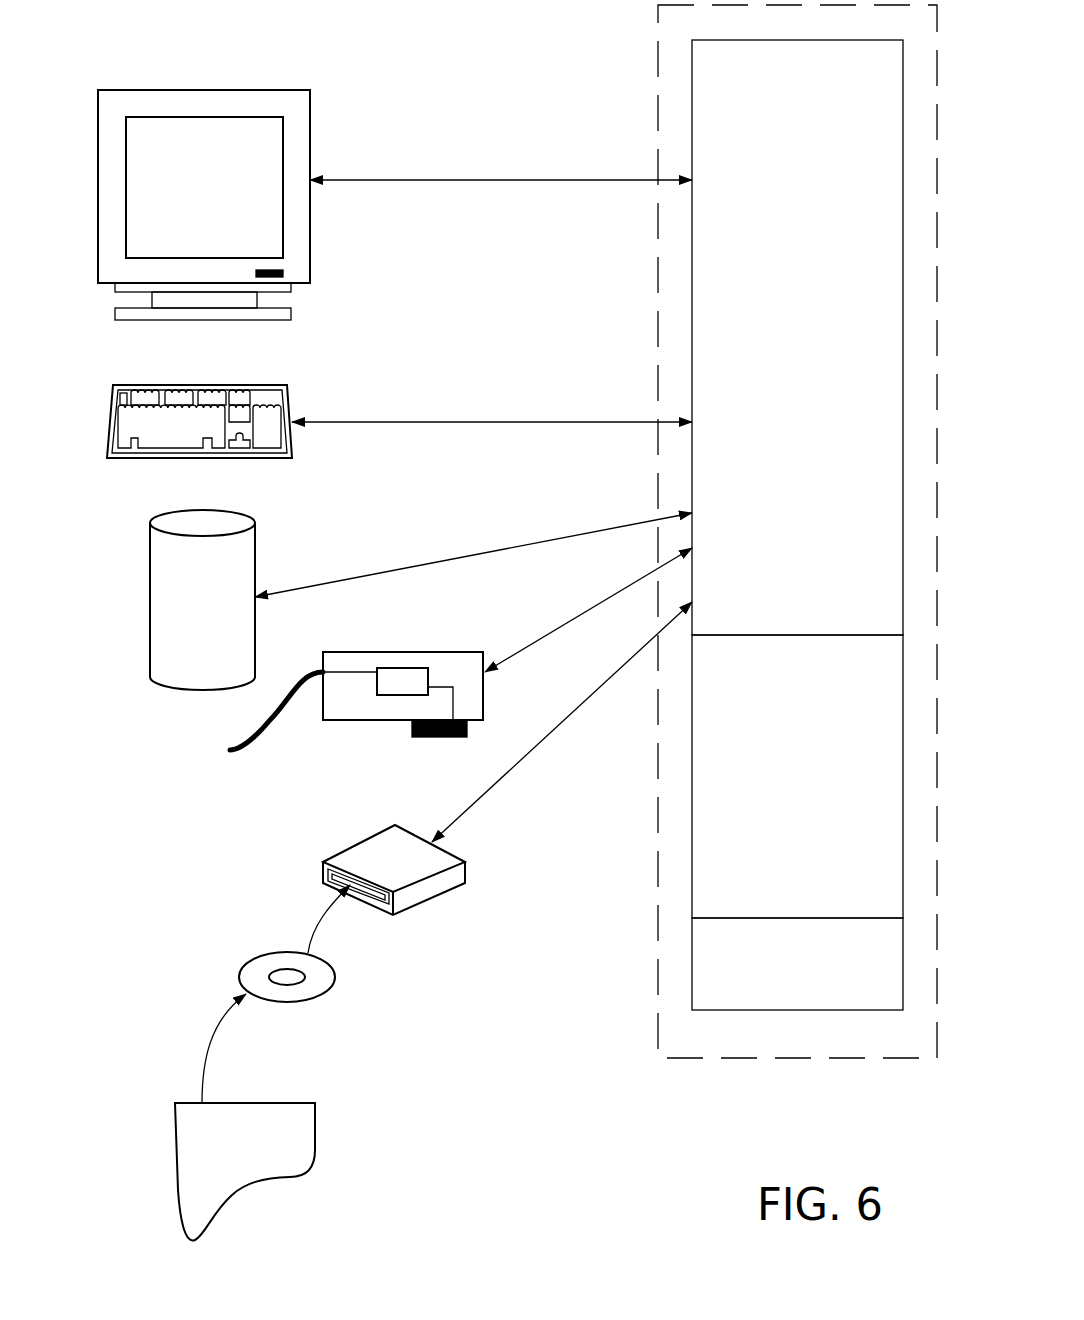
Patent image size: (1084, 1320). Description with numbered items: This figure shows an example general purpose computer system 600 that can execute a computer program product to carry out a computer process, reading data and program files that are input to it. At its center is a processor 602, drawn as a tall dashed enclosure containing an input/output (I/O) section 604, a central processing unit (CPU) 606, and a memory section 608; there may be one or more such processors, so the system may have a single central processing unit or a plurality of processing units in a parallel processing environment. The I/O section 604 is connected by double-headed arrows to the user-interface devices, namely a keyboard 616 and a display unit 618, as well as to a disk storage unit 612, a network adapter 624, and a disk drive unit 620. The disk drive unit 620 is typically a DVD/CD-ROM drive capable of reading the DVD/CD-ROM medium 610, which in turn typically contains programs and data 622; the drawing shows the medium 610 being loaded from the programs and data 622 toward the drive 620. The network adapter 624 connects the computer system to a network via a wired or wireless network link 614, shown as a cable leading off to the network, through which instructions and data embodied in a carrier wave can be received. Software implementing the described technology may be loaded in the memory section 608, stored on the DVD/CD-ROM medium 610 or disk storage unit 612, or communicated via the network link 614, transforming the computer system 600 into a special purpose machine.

The general purpose computer system 600 is at (559, 1088).
The processor 602 is at (657, 75).
The input/output (I/O) section 604 is at (816, 363).
The central processing unit (CPU) 606 is at (816, 801).
The memory section 608 is at (816, 989).
The DVD/CD-ROM medium 610 is at (253, 955).
The disk storage unit 612 is at (150, 543).
The network link 614 is at (258, 750).
The keyboard 616 is at (153, 385).
The display unit 618 is at (168, 90).
The disk drive unit 620 is at (377, 860).
The programs and data 622 is at (317, 1127).
The network adapter 624 is at (377, 722).